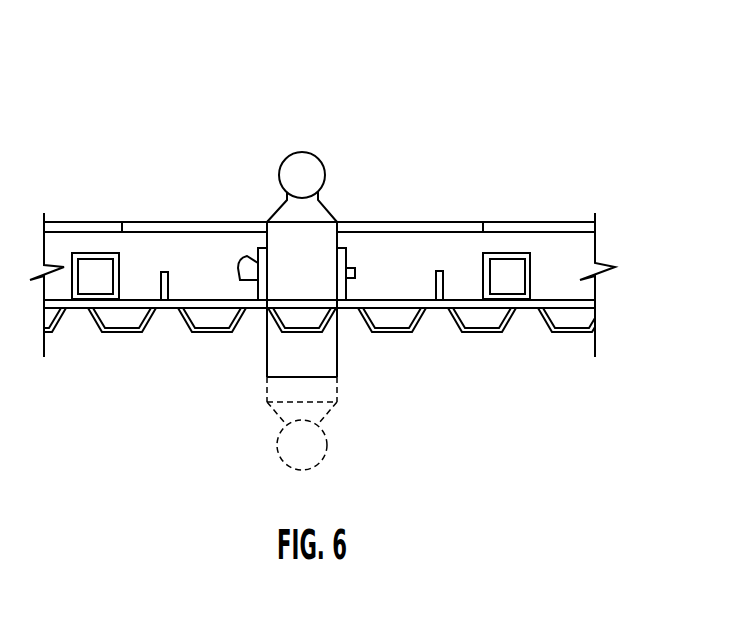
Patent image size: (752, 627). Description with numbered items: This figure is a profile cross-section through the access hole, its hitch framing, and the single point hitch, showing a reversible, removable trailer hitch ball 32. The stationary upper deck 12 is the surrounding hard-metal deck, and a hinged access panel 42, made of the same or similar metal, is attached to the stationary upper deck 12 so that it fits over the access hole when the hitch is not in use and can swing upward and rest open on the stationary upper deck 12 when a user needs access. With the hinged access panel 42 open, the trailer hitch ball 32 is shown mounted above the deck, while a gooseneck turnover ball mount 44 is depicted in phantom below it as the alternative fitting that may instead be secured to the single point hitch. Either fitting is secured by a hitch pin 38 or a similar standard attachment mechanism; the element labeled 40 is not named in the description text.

The stationary upper deck 12 is at (572, 228).
The trailer hitch ball 32 is at (304, 166).
The hitch pin 38 is at (242, 256).
The post / pin 40 is at (160, 266).
The hinged access panel 42 is at (424, 220).
The gooseneck turnover ball mount 44 is at (315, 369).